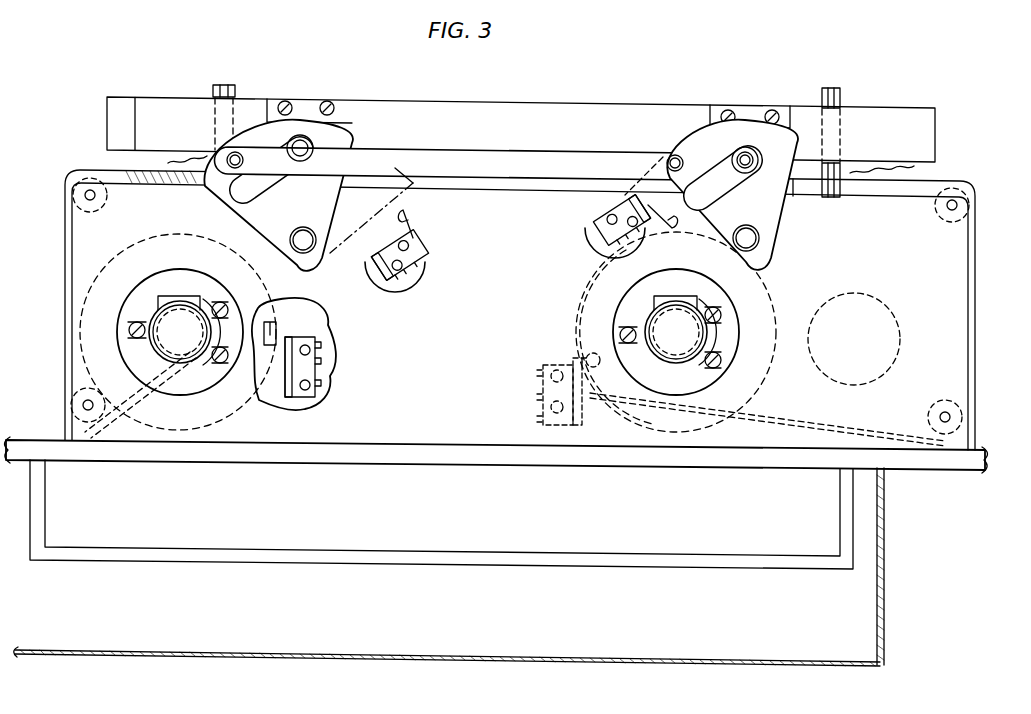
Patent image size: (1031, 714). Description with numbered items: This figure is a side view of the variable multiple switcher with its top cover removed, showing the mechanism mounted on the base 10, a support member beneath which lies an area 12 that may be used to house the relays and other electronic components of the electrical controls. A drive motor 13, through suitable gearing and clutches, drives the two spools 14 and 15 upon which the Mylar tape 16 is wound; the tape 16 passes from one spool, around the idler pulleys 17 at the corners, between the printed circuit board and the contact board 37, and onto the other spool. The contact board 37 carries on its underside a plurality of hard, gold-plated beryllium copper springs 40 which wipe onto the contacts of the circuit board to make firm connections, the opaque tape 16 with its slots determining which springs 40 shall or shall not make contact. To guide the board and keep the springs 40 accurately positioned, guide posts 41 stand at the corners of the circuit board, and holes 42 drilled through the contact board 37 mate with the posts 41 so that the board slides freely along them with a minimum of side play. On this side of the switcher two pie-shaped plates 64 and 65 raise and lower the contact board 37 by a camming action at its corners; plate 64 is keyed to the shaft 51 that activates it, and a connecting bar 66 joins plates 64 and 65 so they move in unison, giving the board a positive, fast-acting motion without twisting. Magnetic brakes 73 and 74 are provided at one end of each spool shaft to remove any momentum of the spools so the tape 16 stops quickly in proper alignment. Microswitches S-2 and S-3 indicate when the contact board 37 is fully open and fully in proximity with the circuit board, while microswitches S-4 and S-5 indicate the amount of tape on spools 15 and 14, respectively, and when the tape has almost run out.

The base 10 is at (566, 462).
The area 12 is at (446, 512).
The drive motor 13 is at (889, 297).
The spool 14 is at (774, 288).
The spool 15 is at (161, 242).
The Mylar tape 16 is at (136, 410).
The idler pulleys 17 is at (70, 192).
The contact board 37 is at (488, 100).
The springs 40 is at (181, 161).
The guide posts 41 is at (229, 88).
The holes 42 is at (213, 111).
The shaft 51 is at (760, 241).
The plate 64 is at (765, 216).
The plate 65 is at (320, 216).
The connecting bar 66 is at (474, 157).
The magnetic brake 73 is at (688, 331).
The magnetic brake 74 is at (192, 331).
The microswitch S-2 is at (423, 240).
The microswitch S-3 is at (598, 215).
The microswitch S-4 is at (330, 354).
The microswitch S-5 is at (541, 364).